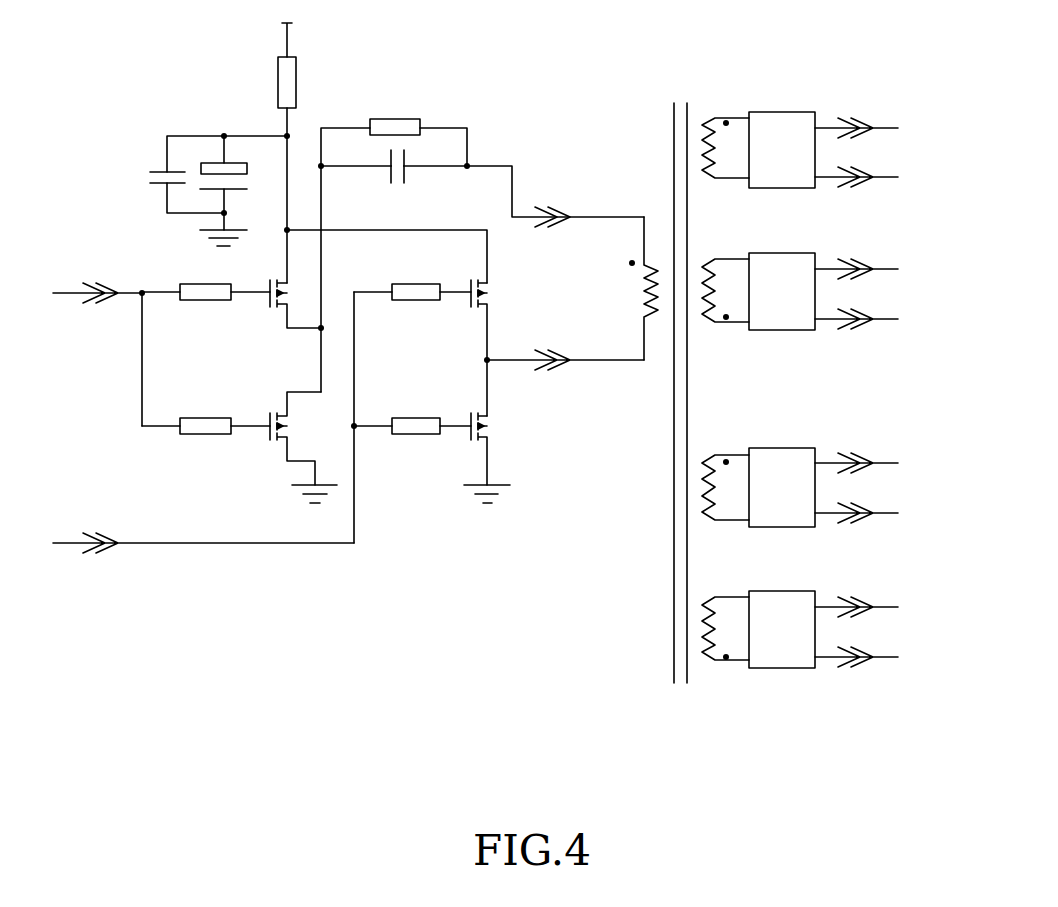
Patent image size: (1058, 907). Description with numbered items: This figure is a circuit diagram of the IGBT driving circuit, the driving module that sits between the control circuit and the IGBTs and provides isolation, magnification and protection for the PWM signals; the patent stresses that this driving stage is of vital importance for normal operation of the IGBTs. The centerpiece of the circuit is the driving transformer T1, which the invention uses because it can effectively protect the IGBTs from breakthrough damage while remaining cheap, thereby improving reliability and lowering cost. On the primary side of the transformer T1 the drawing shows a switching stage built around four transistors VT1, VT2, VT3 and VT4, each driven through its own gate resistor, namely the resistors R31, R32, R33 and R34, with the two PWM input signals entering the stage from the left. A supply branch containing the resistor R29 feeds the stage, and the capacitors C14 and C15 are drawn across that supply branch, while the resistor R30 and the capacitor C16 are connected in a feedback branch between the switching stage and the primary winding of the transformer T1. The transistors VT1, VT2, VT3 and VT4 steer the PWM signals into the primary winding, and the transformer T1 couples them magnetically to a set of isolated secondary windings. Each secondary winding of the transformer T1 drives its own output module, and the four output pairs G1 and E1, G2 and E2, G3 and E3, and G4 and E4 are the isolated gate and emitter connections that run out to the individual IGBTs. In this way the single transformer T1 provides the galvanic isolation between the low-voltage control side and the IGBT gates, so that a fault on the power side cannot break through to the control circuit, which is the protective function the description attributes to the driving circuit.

The resistor R29 is at (310, 82).
The resistor R30 is at (395, 114).
The gate resistor R31 is at (206, 310).
The gate resistor R32 is at (206, 446).
The gate resistor R33 is at (412, 305).
The gate resistor R34 is at (412, 441).
The filter capacitor C14 is at (153, 161).
The electrolytic capacitor C15 is at (234, 166).
The capacitor C16 is at (397, 184).
The MOSFET transistor VT1 is at (279, 294).
The MOSFET transistor VT2 is at (468, 434).
The MOSFET transistor VT3 is at (285, 433).
The MOSFET transistor VT4 is at (468, 334).
The driving transformer T1 is at (782, 375).
The gate drive output 1 G1 is at (875, 128).
The emitter output 1 E1 is at (874, 177).
The gate drive output 2 G2 is at (875, 269).
The emitter output 2 E2 is at (874, 319).
The gate drive output 3 G3 is at (875, 463).
The emitter output 3 E3 is at (874, 513).
The gate drive output 4 G4 is at (875, 607).
The emitter output 4 E4 is at (874, 657).